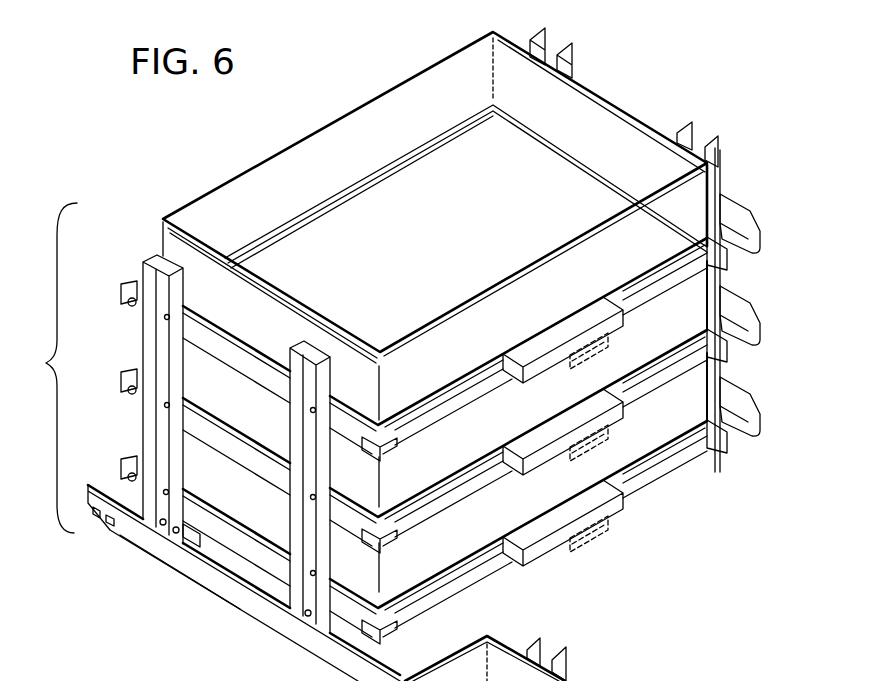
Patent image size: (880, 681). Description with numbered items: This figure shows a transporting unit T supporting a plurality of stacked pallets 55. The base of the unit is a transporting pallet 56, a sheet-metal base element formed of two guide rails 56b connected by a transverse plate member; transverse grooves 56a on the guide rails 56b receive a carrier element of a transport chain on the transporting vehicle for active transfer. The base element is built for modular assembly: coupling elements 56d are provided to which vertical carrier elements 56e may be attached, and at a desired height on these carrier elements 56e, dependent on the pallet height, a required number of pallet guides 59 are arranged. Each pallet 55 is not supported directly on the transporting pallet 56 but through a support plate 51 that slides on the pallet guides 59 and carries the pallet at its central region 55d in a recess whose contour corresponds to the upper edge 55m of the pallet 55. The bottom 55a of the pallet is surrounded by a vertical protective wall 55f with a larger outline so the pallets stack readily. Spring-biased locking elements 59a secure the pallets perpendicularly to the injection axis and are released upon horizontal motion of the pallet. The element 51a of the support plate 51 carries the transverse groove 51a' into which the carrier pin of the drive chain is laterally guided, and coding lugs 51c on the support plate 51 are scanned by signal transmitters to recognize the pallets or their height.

The transporting unit T is at (52, 368).
The pallet 55 is at (386, 84).
The bottom 55a is at (452, 256).
The central region 55d is at (410, 160).
The protective wall 55f is at (502, 344).
The upper edge 55m is at (266, 288).
The support plate 51 is at (690, 267).
The element of the support plate 51a is at (546, 455).
The transverse groove 51a' is at (641, 442).
The coding lug 51c is at (748, 222).
The pallet guide 59 is at (228, 357).
The spring-biased locking element 59a is at (140, 282).
The transporting pallet 56 is at (231, 611).
The transverse groove 56a is at (113, 521).
The guide rail 56b is at (281, 620).
The coupling element 56d is at (190, 532).
The vertical carrier element 56e is at (571, 58).